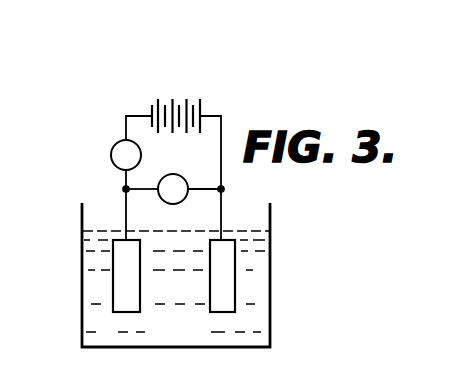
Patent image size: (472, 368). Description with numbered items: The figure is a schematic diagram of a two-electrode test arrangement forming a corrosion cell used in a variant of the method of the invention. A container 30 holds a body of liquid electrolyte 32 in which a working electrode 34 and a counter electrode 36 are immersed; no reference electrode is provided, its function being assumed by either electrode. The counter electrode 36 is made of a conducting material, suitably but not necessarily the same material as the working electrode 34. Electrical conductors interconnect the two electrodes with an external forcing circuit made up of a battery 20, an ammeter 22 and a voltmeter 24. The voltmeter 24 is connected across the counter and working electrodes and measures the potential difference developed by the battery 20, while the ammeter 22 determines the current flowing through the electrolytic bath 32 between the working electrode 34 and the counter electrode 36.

The battery 20 is at (201, 107).
The ammeter 22 is at (110, 154).
The voltmeter 24 is at (203, 169).
The container 30 is at (270, 268).
The body of liquid electrolyte 32 is at (190, 336).
The working electrode 34 is at (116, 287).
The counter electrode 36 is at (230, 288).